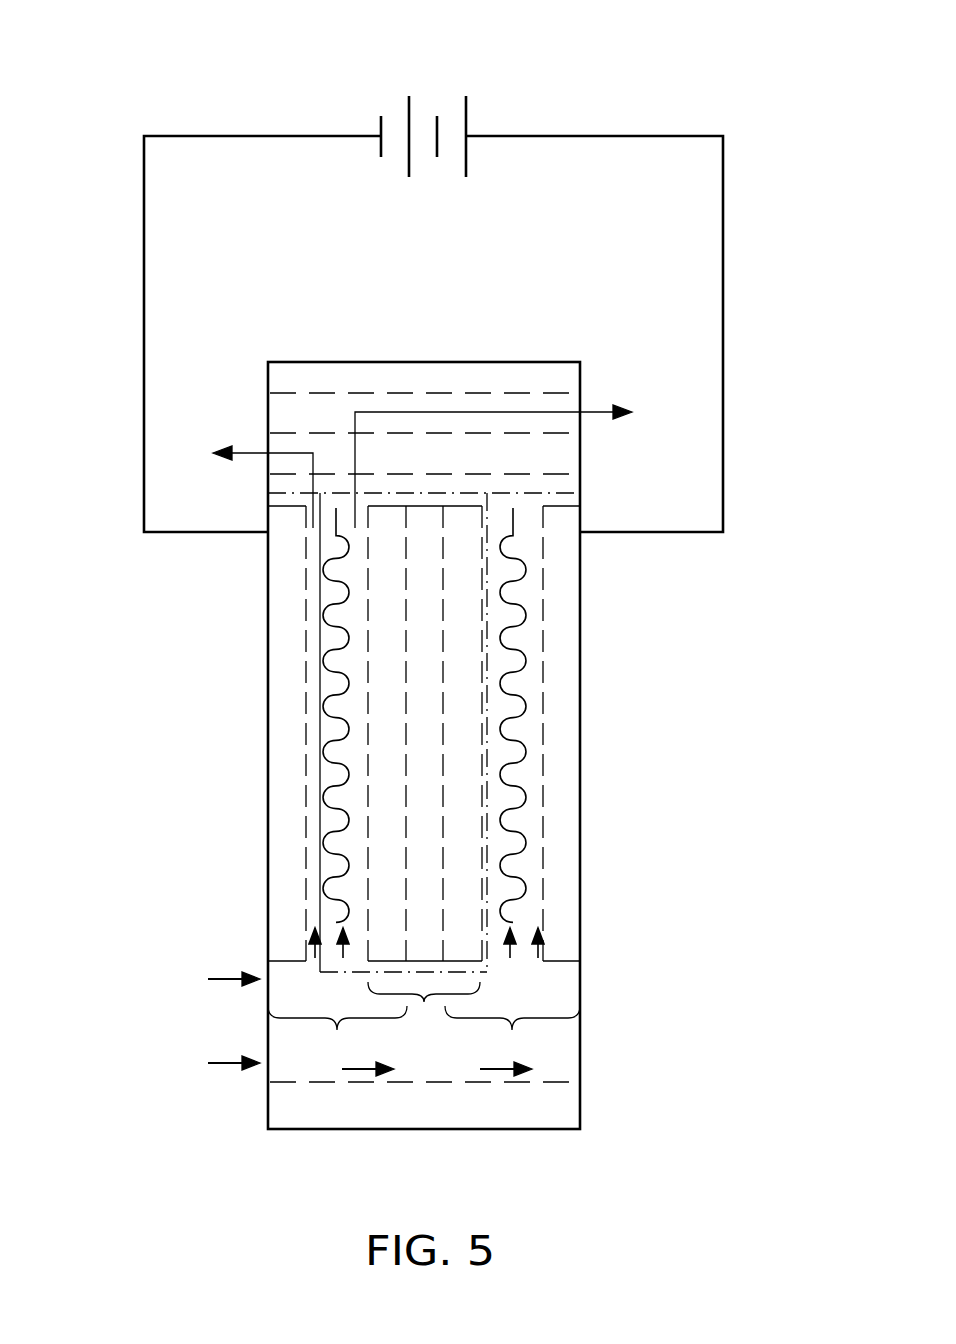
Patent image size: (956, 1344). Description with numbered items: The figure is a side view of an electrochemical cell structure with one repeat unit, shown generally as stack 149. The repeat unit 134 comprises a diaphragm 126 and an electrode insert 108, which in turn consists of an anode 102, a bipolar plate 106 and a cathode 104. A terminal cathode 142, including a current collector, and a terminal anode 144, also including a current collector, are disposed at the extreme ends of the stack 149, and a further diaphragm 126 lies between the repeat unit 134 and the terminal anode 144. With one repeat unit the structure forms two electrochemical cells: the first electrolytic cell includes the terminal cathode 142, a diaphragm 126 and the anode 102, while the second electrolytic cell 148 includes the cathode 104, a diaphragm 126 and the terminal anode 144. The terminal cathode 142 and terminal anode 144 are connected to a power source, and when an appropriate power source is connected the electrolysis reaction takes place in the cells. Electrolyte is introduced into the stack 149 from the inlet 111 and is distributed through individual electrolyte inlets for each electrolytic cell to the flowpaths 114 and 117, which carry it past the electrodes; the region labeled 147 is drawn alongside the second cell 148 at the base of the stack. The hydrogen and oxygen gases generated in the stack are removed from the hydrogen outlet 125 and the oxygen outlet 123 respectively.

The electrochemical cell structure 149 is at (655, 63).
The repeat unit 134 is at (405, 492).
The oxygen outlet 123 is at (302, 414).
The hydrogen outlet 125 is at (552, 452).
The terminal cathode 142 is at (277, 613).
The terminal anode 144 is at (565, 764).
The diaphragm 126 is at (462, 715).
The flowpath 114 is at (318, 863).
The flowpath 117 is at (530, 860).
The anode 102 is at (383, 707).
The cathode 104 is at (470, 707).
The bipolar plate 106 is at (423, 802).
The first flow path 147 is at (337, 1041).
The second electrolytic cell 148 is at (512, 1041).
The electrode insert 108 is at (424, 1002).
The inlet 111 is at (567, 1055).